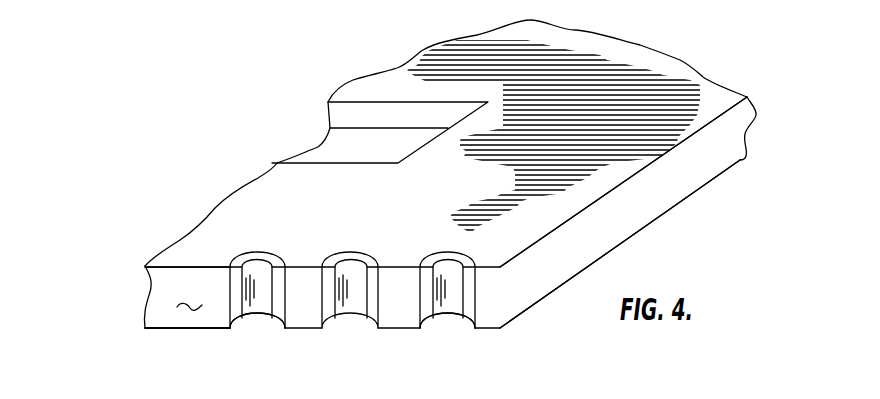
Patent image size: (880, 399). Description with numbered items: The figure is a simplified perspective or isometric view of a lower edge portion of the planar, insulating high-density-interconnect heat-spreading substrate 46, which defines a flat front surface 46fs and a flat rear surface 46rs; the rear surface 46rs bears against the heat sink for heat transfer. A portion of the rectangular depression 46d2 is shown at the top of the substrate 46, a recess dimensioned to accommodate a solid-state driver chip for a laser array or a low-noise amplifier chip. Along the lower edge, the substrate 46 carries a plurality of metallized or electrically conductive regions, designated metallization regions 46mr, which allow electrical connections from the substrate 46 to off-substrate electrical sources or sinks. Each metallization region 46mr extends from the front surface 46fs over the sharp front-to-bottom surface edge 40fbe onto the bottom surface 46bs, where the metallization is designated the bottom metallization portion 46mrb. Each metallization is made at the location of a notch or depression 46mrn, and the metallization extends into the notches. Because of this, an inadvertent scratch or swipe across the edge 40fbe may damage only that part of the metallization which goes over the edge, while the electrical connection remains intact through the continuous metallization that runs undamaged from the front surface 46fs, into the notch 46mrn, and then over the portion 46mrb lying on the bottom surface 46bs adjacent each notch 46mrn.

The HDI heat-spreading substrate 46 is at (733, 139).
The front surface 46fs is at (698, 95).
The rear surface 46rs is at (682, 200).
The rectangular depression 46d2 is at (352, 148).
The front bottom edge 40fbe is at (166, 280).
The bottom surface 46bs is at (188, 312).
The metallization region 46mr is at (260, 252).
The notch 46mrn is at (262, 297).
The metallization portion on bottom surface 46mrb is at (236, 311).